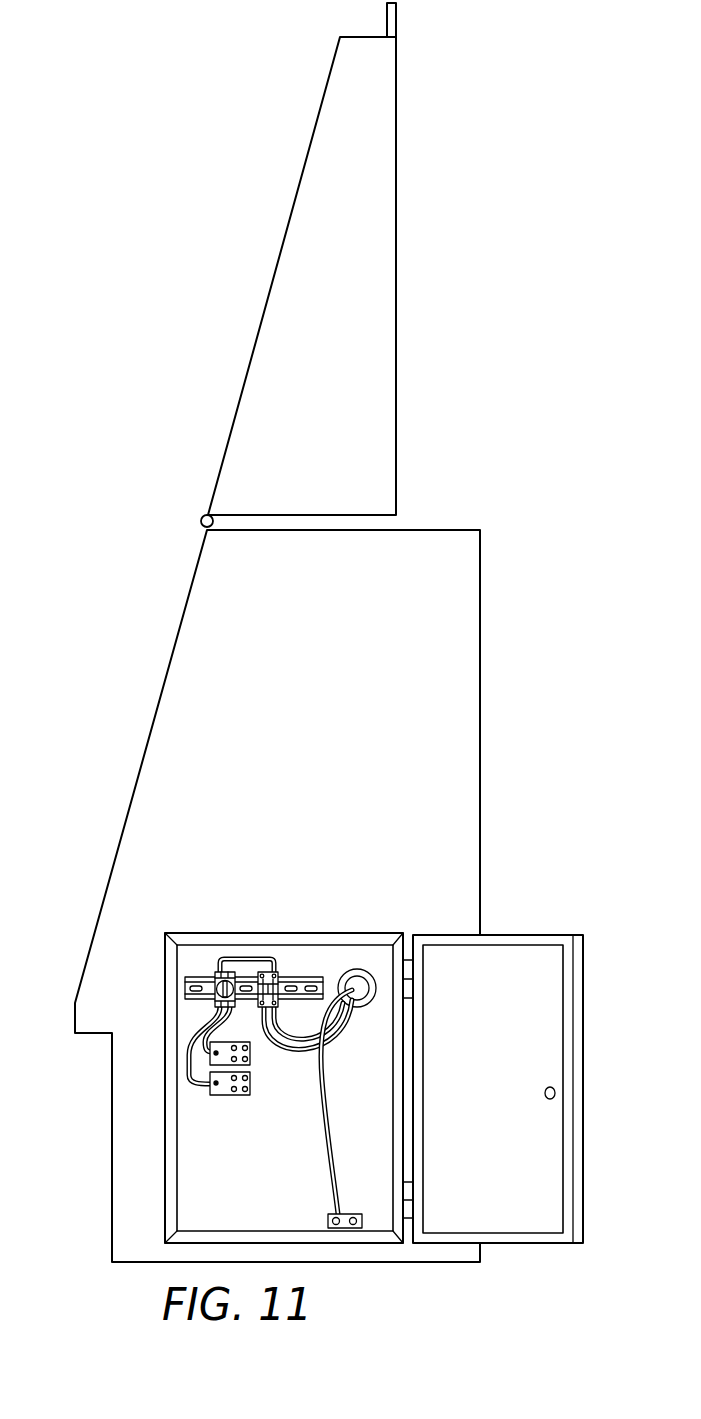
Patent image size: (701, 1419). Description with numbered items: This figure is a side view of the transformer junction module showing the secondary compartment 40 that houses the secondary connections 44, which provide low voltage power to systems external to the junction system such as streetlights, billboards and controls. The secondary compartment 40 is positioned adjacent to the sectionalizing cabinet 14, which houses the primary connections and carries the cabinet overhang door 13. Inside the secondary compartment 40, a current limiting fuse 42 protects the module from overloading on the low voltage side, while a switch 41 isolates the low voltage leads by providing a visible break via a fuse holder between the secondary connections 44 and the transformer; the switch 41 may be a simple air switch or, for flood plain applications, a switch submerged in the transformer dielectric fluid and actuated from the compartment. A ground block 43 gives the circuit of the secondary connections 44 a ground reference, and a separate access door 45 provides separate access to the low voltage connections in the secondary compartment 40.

The cabinet overhang door 13 is at (375, 244).
The sectionalizing cabinet 14 is at (367, 738).
The secondary compartment 40 is at (205, 1160).
The switch 41 is at (212, 1002).
The current limiting fuse 42 is at (277, 975).
The ground block 43 is at (340, 1233).
The secondary connections 44 is at (207, 1083).
The separate access door 45 is at (553, 1050).